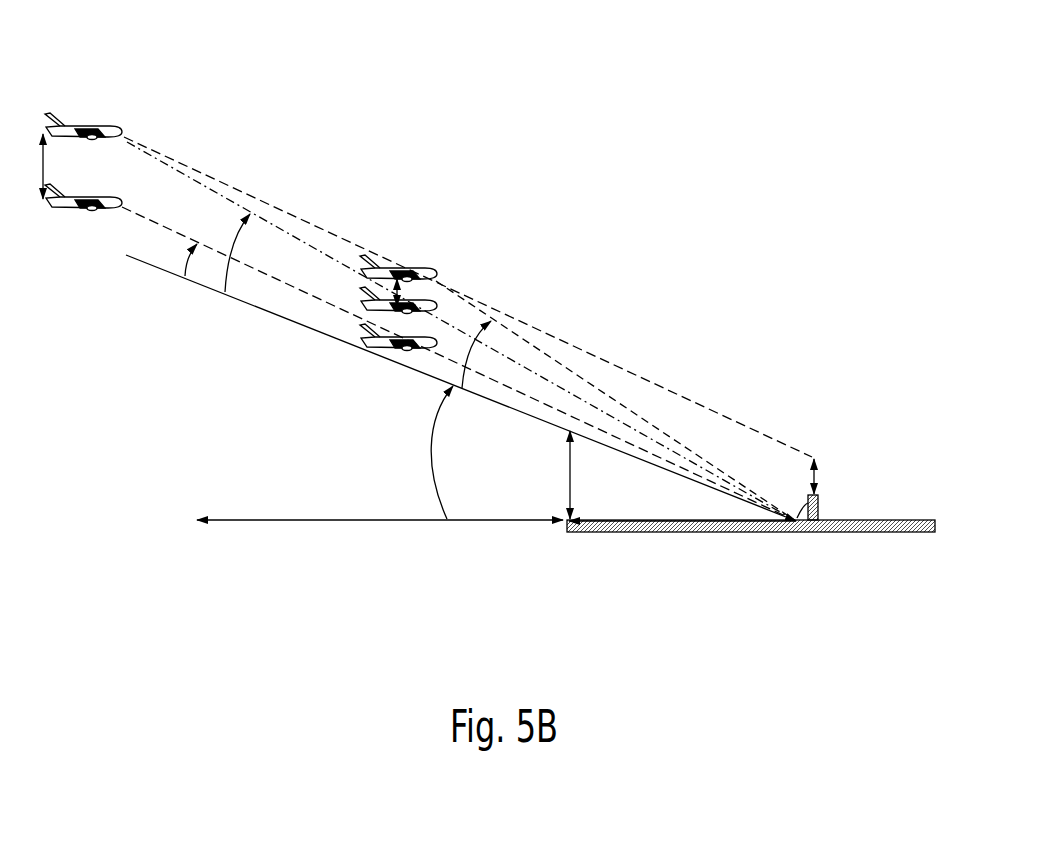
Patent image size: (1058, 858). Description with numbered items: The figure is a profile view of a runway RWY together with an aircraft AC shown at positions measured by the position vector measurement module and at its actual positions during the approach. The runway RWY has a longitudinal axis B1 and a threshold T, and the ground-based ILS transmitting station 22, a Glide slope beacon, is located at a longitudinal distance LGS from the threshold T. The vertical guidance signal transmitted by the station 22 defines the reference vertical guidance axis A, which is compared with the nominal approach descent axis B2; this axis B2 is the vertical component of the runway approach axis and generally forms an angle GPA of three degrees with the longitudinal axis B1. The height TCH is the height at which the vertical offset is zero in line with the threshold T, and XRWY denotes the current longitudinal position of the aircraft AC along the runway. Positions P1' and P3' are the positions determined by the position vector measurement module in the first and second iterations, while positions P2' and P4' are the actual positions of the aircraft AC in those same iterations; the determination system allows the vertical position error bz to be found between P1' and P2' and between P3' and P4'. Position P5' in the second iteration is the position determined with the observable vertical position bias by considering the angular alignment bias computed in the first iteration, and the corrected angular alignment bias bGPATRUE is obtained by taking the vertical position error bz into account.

The measured aircraft position at first iteration P1' is at (83, 82).
The actual aircraft position at first iteration P2' is at (83, 249).
The measured aircraft position at second iteration P3' is at (413, 207).
The actual aircraft position at second iteration P4' is at (362, 387).
The position determined with observable vertical position bias P5' is at (488, 271).
The aircraft AC is at (92, 196).
The reference vertical guidance axis A is at (168, 226).
The ILS transmitting station 22 is at (824, 500).
The longitudinal axis of the runway B1 is at (313, 527).
The nominal approach descent axis B2 is at (238, 298).
The threshold of the runway T is at (571, 534).
The runway RWY is at (853, 533).
The angle between descent axis and runway axis GPA is at (414, 452).
The threshold crossing height TCH is at (543, 475).
The vertical position error bz is at (416, 314).
The corrected angular alignment bias bGPATRUE is at (148, 272).
The current longitudinal position XRWY is at (399, 539).
The longitudinal distance between transmitting station and threshold LGS is at (682, 542).